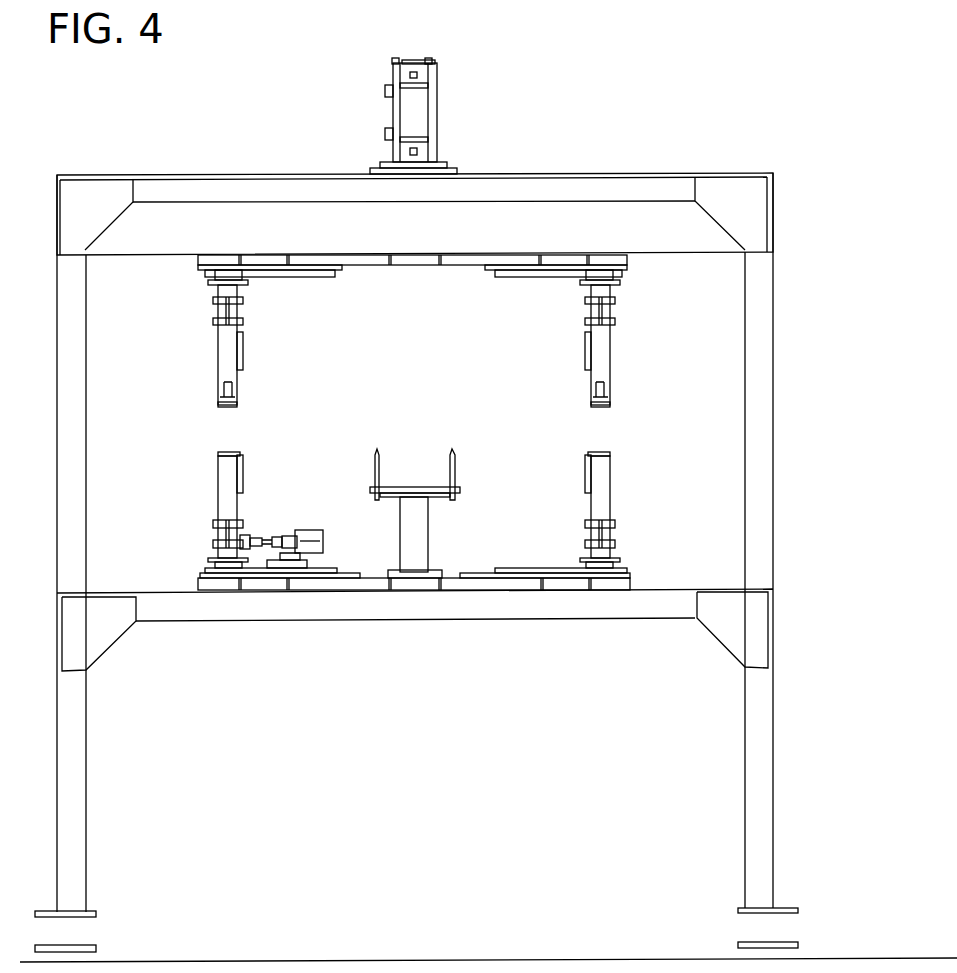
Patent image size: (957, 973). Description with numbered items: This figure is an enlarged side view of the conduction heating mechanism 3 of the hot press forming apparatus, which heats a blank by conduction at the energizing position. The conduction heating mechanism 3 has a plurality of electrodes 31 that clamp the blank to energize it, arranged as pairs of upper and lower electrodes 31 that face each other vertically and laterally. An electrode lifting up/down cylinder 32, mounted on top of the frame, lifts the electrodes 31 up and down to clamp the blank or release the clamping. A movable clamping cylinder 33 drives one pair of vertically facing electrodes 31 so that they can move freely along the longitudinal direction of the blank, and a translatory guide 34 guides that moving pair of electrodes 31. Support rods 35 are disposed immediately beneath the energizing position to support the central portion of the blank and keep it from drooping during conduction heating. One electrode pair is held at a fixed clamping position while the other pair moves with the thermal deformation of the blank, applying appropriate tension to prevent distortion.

The conduction heating mechanism 3 is at (586, 233).
The electrodes 31 is at (218, 407).
The electrode lifting up/down cylinder 32 is at (447, 112).
The movable clamping cylinder 33 is at (311, 523).
The translatory guide 34 is at (207, 560).
The support rods 35 is at (445, 457).